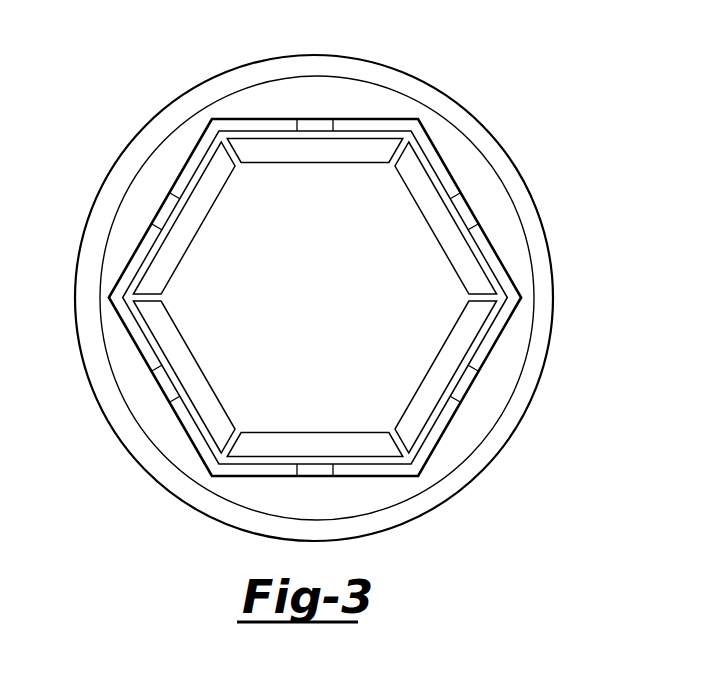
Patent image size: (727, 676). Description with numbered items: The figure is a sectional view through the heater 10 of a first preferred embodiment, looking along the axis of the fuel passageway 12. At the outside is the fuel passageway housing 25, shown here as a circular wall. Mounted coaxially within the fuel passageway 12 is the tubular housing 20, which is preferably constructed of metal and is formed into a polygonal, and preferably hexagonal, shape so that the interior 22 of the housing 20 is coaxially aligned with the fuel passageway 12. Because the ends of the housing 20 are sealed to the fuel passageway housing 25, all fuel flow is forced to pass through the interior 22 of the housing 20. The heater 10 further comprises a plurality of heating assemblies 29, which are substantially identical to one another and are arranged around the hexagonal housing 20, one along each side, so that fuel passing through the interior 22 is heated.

The heater 10 is at (351, 274).
The fuel passageway 12 is at (333, 306).
The housing 20 is at (495, 343).
The interior 22 is at (423, 408).
The fuel passageway housing 25 is at (502, 143).
The heating assemblies 29 is at (425, 215).